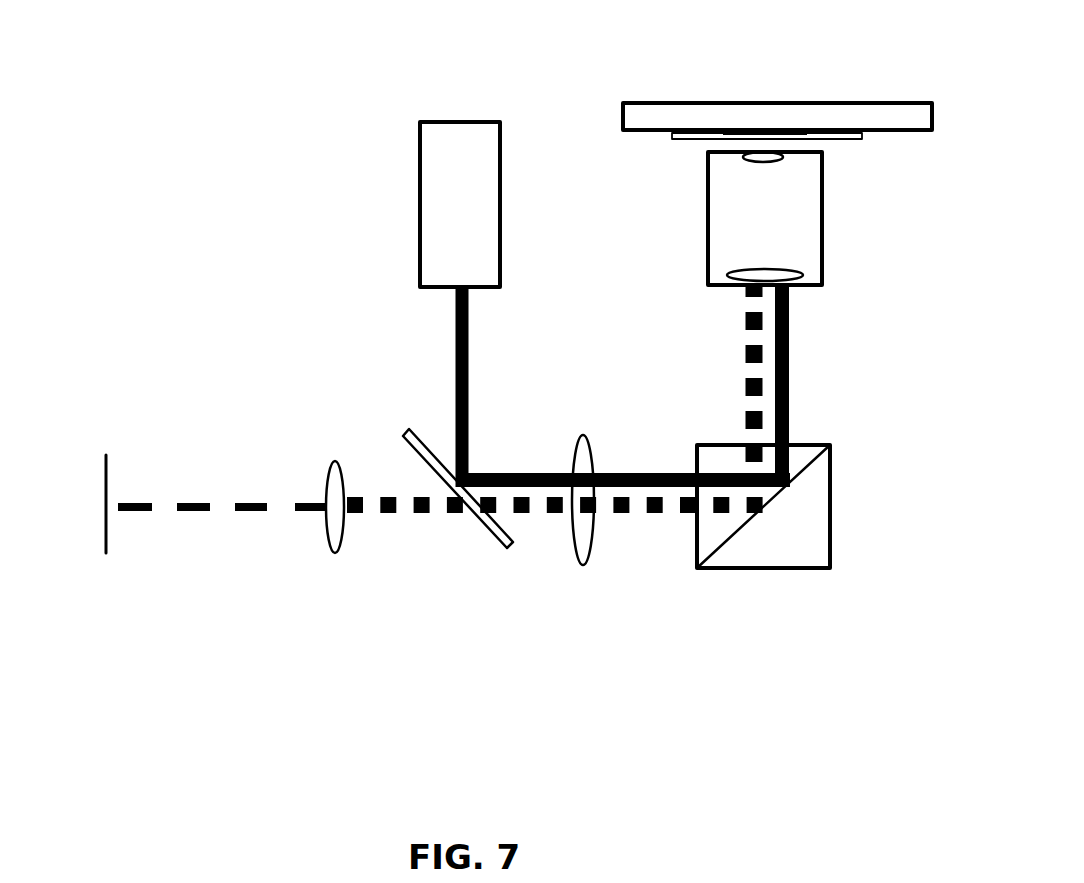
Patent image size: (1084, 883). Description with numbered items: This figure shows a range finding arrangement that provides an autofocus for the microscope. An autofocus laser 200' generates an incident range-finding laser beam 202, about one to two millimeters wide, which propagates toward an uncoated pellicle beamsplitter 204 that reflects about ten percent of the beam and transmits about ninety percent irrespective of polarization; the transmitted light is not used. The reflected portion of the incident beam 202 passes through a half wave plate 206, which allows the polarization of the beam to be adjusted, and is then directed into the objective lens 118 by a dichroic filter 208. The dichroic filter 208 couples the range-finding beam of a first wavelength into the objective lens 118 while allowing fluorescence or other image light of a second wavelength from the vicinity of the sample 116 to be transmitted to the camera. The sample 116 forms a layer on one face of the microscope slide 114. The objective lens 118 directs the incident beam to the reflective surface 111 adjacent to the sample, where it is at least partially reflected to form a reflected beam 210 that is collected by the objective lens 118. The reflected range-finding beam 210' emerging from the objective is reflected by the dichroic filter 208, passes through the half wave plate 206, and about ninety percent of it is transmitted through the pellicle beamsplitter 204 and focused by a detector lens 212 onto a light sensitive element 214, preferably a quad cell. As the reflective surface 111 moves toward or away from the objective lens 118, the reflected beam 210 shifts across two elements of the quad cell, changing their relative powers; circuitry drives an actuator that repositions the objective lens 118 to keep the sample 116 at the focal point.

The reflective surface 111 is at (677, 143).
The microscope slide 114 is at (868, 100).
The sample 116 is at (747, 133).
The objective lens 118 is at (822, 207).
The autofocus laser 200' is at (400, 204).
The incident range-finding laser beam 202 is at (455, 330).
The pellicle beamsplitter 204 is at (492, 532).
The half wave plate 206 is at (590, 562).
The dichroic filter 208 is at (810, 520).
The reflected range-finding beam 210 is at (222, 474).
The reflected range-finding beam 210' is at (555, 396).
The detector lens 212 is at (327, 530).
The light sensitive element 214 is at (105, 457).